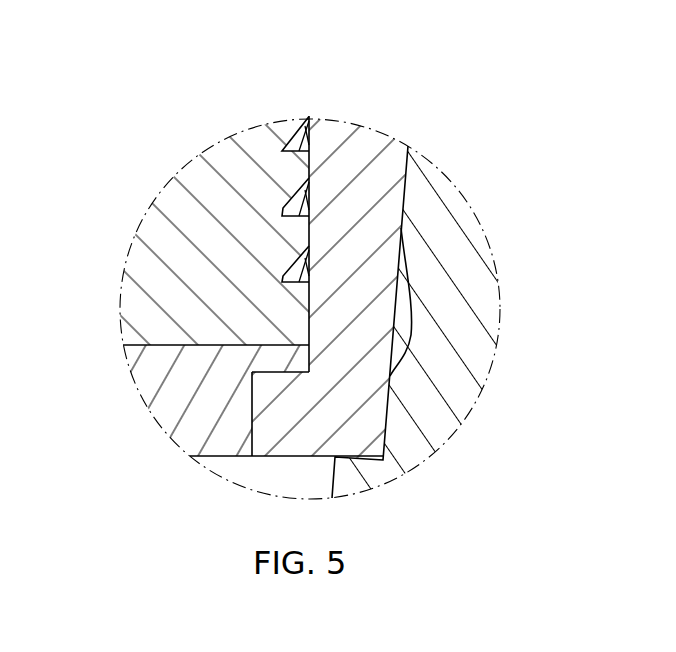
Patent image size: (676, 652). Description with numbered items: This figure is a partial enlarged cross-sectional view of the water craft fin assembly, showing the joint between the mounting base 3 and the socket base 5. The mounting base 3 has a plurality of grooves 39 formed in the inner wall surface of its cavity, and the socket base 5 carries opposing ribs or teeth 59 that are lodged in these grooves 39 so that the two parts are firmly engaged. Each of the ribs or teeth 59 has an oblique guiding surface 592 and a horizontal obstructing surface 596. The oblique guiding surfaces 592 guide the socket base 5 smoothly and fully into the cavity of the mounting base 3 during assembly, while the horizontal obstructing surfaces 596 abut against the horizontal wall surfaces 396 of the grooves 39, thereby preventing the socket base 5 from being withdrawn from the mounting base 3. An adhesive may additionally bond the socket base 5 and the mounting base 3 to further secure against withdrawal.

The mounting base 3 is at (122, 296).
The grooves 39 is at (264, 156).
The horizontal wall surfaces 396 is at (288, 132).
The socket base 5 is at (392, 158).
The ribs or teeth 59 is at (330, 241).
The oblique guiding surface 592 is at (299, 122).
The horizontal obstructing surface 596 is at (309, 154).